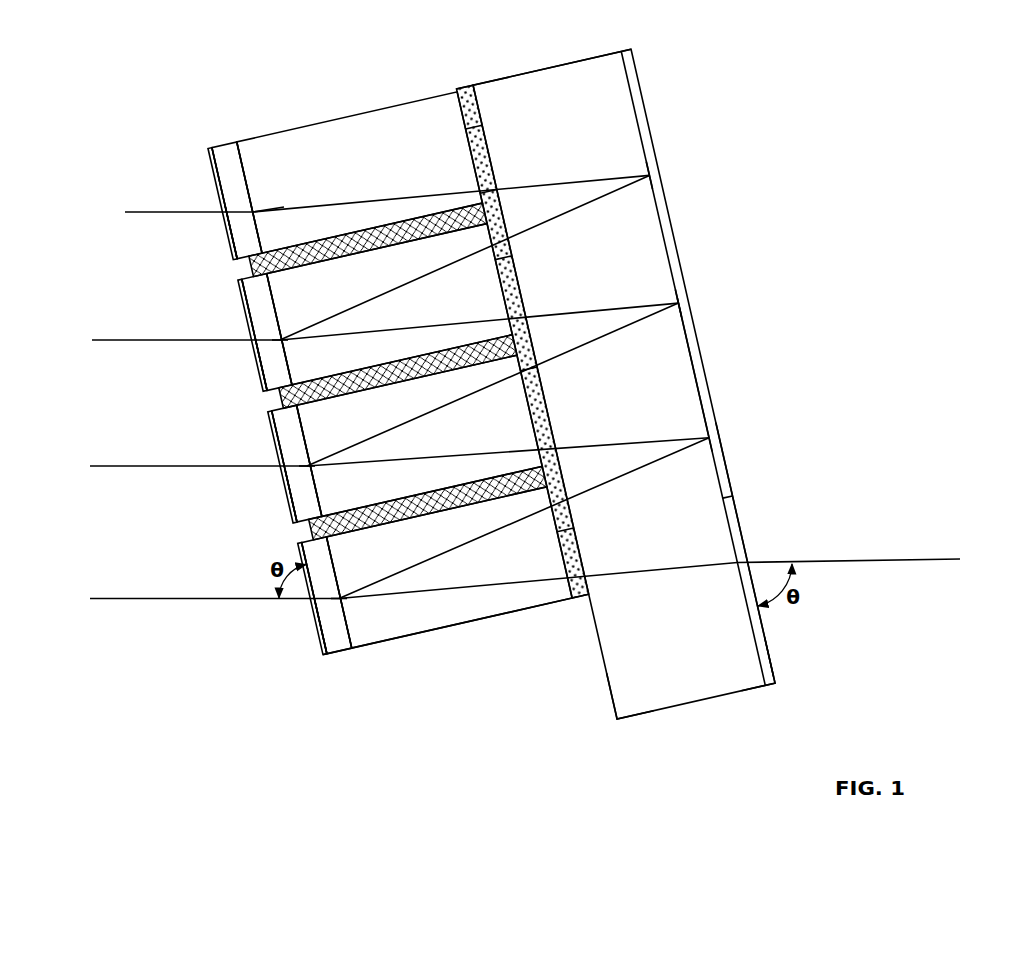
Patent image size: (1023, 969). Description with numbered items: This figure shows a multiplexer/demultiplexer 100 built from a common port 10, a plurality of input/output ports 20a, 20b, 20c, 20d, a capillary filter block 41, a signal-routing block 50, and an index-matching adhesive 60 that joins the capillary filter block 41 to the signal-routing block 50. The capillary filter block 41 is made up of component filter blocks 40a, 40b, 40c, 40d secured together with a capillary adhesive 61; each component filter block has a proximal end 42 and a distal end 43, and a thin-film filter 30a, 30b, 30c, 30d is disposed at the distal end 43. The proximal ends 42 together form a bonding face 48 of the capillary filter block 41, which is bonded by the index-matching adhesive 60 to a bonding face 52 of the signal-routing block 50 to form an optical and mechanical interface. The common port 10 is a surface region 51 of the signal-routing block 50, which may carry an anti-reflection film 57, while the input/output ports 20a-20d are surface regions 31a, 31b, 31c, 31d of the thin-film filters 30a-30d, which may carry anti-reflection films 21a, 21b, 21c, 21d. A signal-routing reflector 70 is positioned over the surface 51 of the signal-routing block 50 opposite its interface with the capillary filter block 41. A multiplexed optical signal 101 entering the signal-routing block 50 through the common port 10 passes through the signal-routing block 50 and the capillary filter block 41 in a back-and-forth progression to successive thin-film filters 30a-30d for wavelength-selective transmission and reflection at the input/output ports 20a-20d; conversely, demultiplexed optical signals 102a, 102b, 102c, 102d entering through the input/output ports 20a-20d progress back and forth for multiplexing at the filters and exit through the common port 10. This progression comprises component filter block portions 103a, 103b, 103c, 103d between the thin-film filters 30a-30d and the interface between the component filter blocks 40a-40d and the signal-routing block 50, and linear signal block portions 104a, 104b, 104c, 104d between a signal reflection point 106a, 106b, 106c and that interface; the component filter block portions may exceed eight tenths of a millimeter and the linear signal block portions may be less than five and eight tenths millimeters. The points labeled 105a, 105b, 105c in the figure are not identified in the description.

The common port 10 is at (775, 546).
The multiplexer/demultiplexer 100 is at (885, 145).
The multiplexed optical signal 101 is at (867, 558).
The demultiplexed optical signal 102a is at (190, 598).
The demultiplexed optical signal 102b is at (176, 466).
The demultiplexed optical signal 102c is at (164, 340).
The demultiplexed optical signal 102d is at (169, 212).
The component filter block portion 103a is at (400, 578).
The component filter block portion 103b is at (330, 446).
The component filter block portion 103c is at (320, 310).
The component filter block portion 103d is at (284, 207).
The linear signal block portion 104a is at (704, 563).
The linear signal block portion 104b is at (650, 434).
The linear signal block portion 104c is at (620, 310).
The linear signal block portion 104d is at (596, 178).
The intersection point 105a is at (340, 603).
The intersection point 105b is at (300, 482).
The intersection point 105c is at (277, 320).
The signal reflection point 106a is at (714, 437).
The signal reflection point 106b is at (683, 304).
The signal reflection point 106c is at (653, 176).
The input/output port 20a is at (300, 630).
The input/output port 20b is at (270, 506).
The input/output port 20c is at (245, 371).
The input/output port 20d is at (198, 180).
The anti-reflection film 21a is at (307, 607).
The anti-reflection film 21b is at (285, 498).
The anti-reflection film 21c is at (250, 346).
The anti-reflection film 21d is at (220, 198).
The thin-film filter 30a is at (330, 654).
The thin-film filter 30b is at (268, 432).
The thin-film filter 30c is at (232, 292).
The thin-film filter 30d is at (226, 147).
The surface region 31a is at (333, 568).
The surface region 31b is at (318, 478).
The surface region 31c is at (288, 344).
The surface region 31d is at (258, 213).
The component filter block 40a is at (492, 622).
The component filter block 40b is at (443, 437).
The component filter block 40c is at (428, 303).
The component filter block 40d is at (395, 127).
The capillary filter block 41 is at (421, 733).
The proximal end 42 is at (477, 122).
The distal end 43 is at (242, 216).
The bonding face 48 is at (577, 586).
The signal-routing block 50 is at (700, 694).
The surface region 51 is at (777, 683).
The bonding face 52 is at (614, 715).
The anti-reflection film 57 is at (763, 618).
The index-matching adhesive 60 is at (462, 90).
The capillary adhesive 61 is at (400, 245).
The signal-routing reflector 70 is at (703, 358).